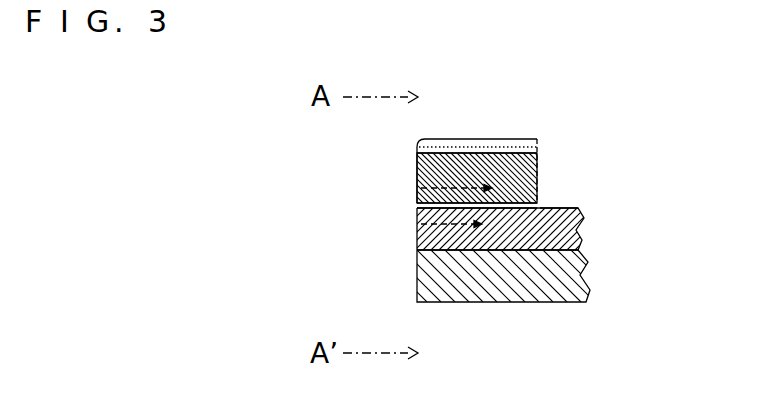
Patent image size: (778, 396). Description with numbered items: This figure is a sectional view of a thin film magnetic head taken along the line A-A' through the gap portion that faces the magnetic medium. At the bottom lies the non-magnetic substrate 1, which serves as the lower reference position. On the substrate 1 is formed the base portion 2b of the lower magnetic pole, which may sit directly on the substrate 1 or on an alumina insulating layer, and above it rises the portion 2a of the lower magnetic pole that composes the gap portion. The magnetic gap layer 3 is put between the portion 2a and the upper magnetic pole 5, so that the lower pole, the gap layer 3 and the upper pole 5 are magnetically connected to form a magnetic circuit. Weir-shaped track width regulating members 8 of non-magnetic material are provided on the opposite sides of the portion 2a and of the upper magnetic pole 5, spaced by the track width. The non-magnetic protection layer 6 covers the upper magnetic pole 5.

The non-magnetic substrate 1 is at (588, 275).
The portion of the lower magnetic pole 2a is at (520, 216).
The base portion of the lower magnetic pole 2b is at (589, 226).
The magnetic gap layer 3 is at (412, 206).
The upper magnetic pole 5 is at (518, 172).
The non-magnetic protection layer 6 is at (518, 143).
The track width regulating members 8 is at (416, 185).